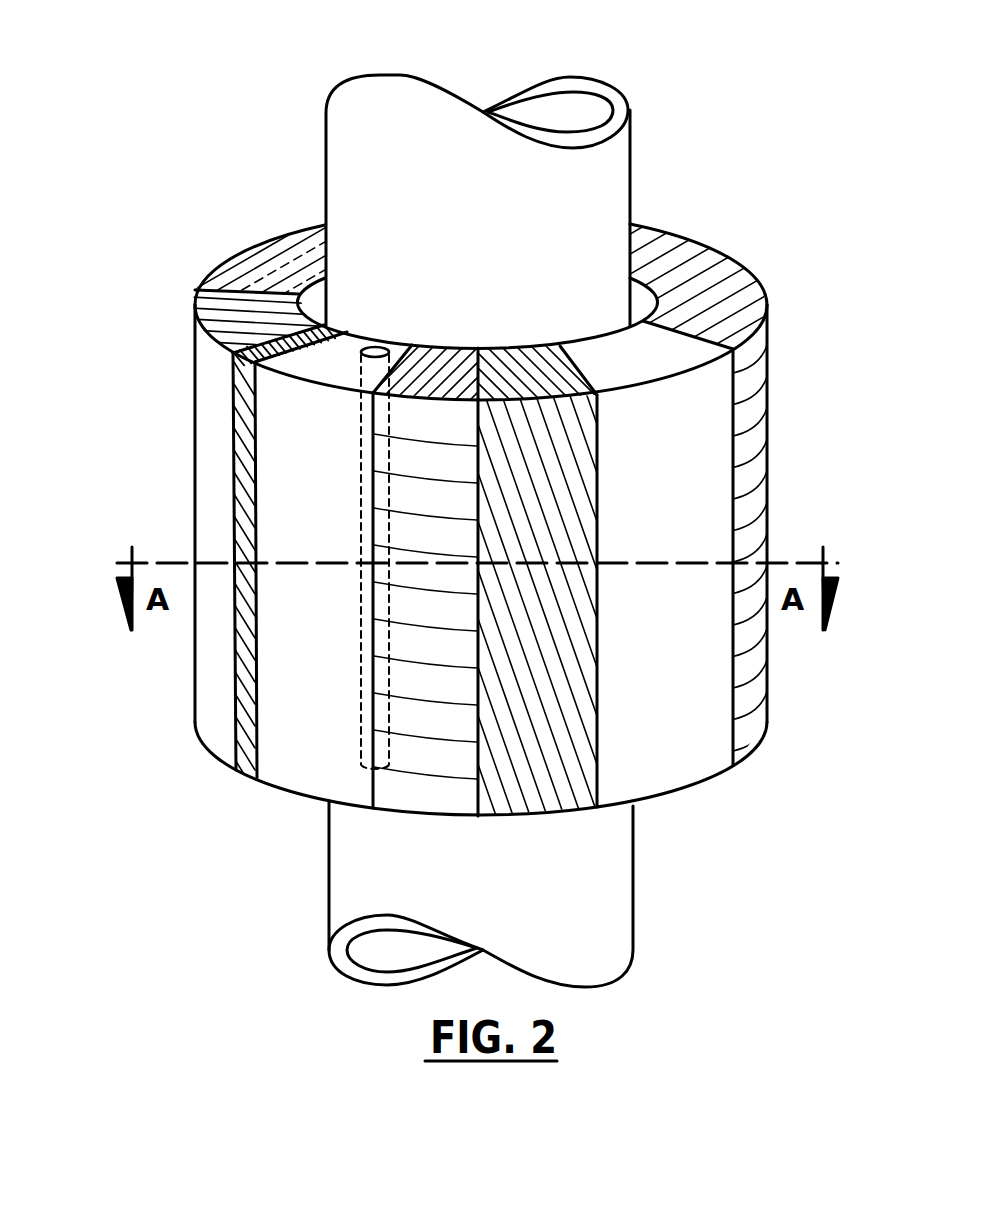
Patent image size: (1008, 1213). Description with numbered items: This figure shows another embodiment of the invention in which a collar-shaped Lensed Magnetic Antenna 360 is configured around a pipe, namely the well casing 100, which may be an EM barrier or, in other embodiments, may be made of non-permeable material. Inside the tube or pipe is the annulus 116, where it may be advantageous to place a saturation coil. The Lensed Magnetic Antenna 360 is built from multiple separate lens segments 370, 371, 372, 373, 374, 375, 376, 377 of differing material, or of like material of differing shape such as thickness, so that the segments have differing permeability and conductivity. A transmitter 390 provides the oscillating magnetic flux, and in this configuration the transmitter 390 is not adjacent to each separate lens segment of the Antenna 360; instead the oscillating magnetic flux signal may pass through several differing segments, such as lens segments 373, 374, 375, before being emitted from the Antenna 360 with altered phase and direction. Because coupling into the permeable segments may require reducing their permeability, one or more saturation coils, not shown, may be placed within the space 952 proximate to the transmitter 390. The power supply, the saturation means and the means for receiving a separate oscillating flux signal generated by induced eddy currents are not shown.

The well casing 100 is at (632, 172).
The annulus 116 is at (565, 112).
The Lensed Magnetic Antenna 360 is at (790, 426).
The lens segment 370 is at (260, 261).
The lens segment 371 is at (228, 421).
The lens segment 372 is at (245, 775).
The lens segment 373 is at (318, 780).
The lens segment 374 is at (444, 796).
The lens segment 375 is at (570, 812).
The lens segment 376 is at (671, 749).
The lens segment 377 is at (680, 257).
The transmitter 390 is at (376, 350).
The space 952 is at (312, 285).